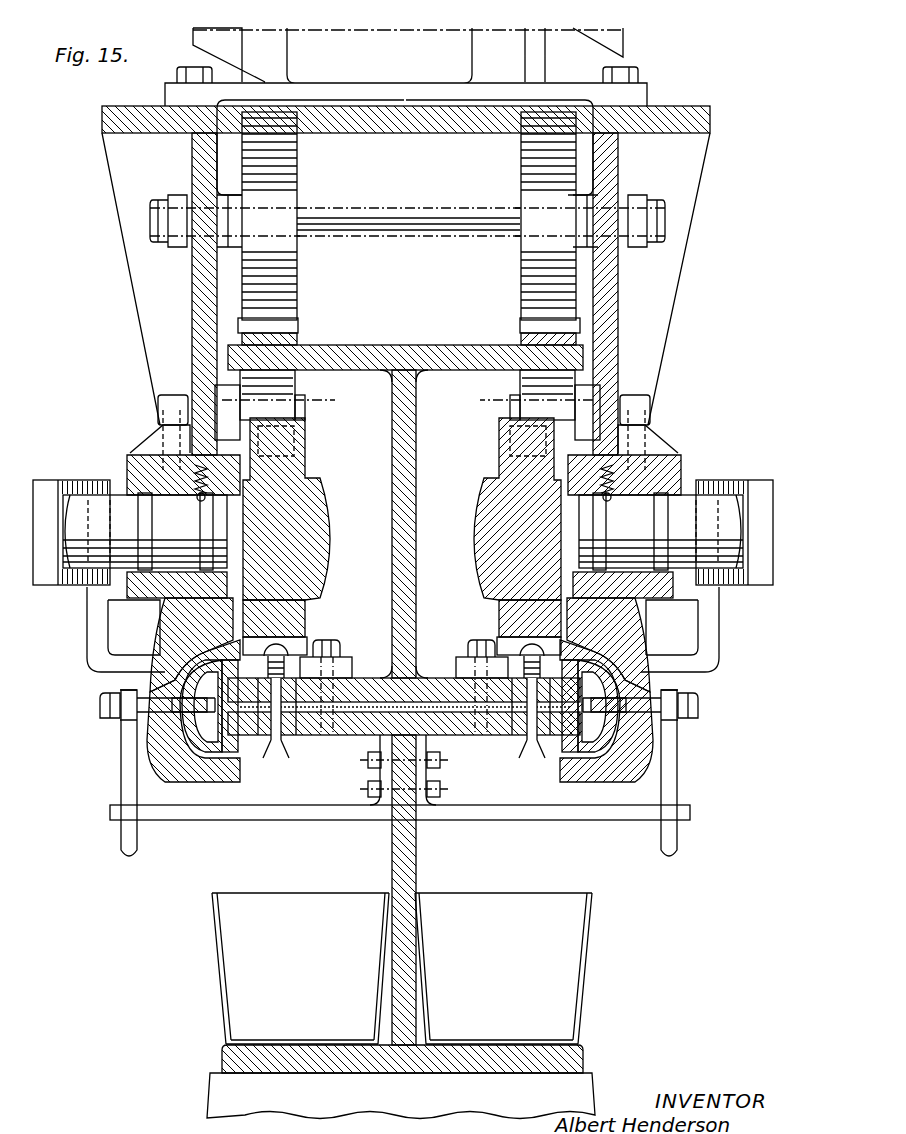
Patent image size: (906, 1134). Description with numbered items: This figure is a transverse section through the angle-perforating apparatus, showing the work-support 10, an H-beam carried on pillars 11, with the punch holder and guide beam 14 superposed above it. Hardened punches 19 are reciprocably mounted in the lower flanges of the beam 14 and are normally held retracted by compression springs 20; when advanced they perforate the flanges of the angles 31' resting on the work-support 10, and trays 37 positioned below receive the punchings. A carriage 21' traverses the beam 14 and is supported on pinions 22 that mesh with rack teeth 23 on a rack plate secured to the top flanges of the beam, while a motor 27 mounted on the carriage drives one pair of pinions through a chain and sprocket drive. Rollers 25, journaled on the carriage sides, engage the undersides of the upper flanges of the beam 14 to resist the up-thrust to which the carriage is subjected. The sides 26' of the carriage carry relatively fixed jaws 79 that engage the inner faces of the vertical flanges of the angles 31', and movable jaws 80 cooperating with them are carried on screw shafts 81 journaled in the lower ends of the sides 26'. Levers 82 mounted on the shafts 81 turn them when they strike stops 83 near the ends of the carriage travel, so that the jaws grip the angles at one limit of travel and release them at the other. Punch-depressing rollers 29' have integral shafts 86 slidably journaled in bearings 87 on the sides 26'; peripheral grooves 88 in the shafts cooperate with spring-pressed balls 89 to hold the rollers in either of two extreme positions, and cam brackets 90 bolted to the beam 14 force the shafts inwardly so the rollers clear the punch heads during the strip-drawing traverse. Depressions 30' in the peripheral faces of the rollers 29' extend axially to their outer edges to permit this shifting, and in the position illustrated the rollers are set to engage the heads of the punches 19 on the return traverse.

The motor 27 is at (406, 67).
The carriage 21' is at (406, 251).
The sides of the carriage 26' is at (407, 277).
The pinions 22 is at (285, 168).
The rack teeth 23 is at (298, 323).
The rollers 25 is at (287, 393).
The H-beam 14 is at (400, 421).
The punch-depressing rollers 29' is at (402, 509).
The depressions 30' is at (402, 535).
The spring-pressed balls 89 is at (165, 490).
The bearing 87 is at (150, 452).
The cam brackets 90 is at (80, 492).
The peripheral grooves 88 is at (203, 517).
The shafts 86 is at (727, 493).
The fixed jaws 79 is at (185, 649).
The movable jaws 80 is at (193, 742).
The angles 31' is at (400, 732).
The screw shafts 81 is at (146, 708).
The levers 82 is at (125, 759).
The stops 83 is at (200, 812).
The punch 19 is at (271, 738).
The compression springs 20 is at (282, 665).
The work-support 10 is at (400, 858).
The trays 37 is at (217, 943).
The pillars 11 is at (221, 1097).